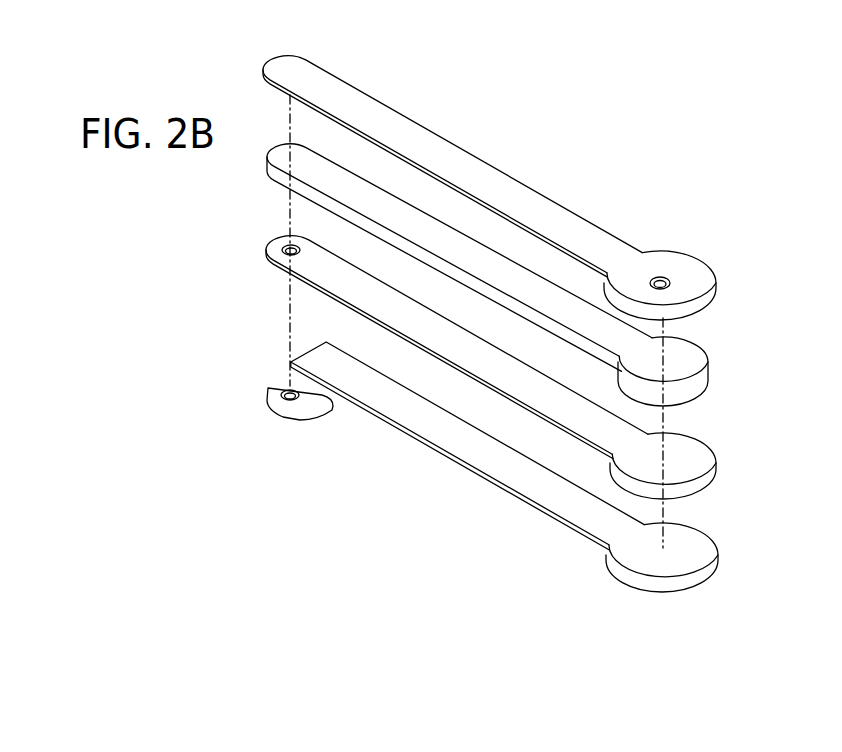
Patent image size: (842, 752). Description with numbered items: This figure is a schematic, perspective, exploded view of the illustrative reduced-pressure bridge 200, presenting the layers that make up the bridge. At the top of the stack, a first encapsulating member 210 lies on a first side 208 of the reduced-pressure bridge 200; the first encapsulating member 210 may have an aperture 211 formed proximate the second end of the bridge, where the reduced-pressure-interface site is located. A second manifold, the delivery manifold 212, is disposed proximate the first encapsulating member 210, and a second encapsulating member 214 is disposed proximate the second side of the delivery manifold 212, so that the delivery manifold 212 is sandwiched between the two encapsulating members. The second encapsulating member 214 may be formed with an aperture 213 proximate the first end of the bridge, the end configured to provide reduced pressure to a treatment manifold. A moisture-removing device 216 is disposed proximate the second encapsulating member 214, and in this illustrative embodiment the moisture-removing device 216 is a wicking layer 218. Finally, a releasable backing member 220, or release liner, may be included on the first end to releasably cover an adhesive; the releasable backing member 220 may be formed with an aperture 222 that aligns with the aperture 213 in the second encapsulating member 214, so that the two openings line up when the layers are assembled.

The reduced-pressure bridge 200 is at (578, 148).
The first side 208 is at (346, 93).
The first encapsulating member 210 is at (602, 240).
The aperture 211 is at (668, 281).
The delivery manifold 212 is at (703, 354).
The aperture 213 is at (286, 246).
The second encapsulating member 214 is at (700, 463).
The moisture-removing device 216 is at (700, 556).
The wicking layer 218 is at (382, 427).
The releasable backing member 220 is at (280, 415).
The aperture 222 is at (287, 390).